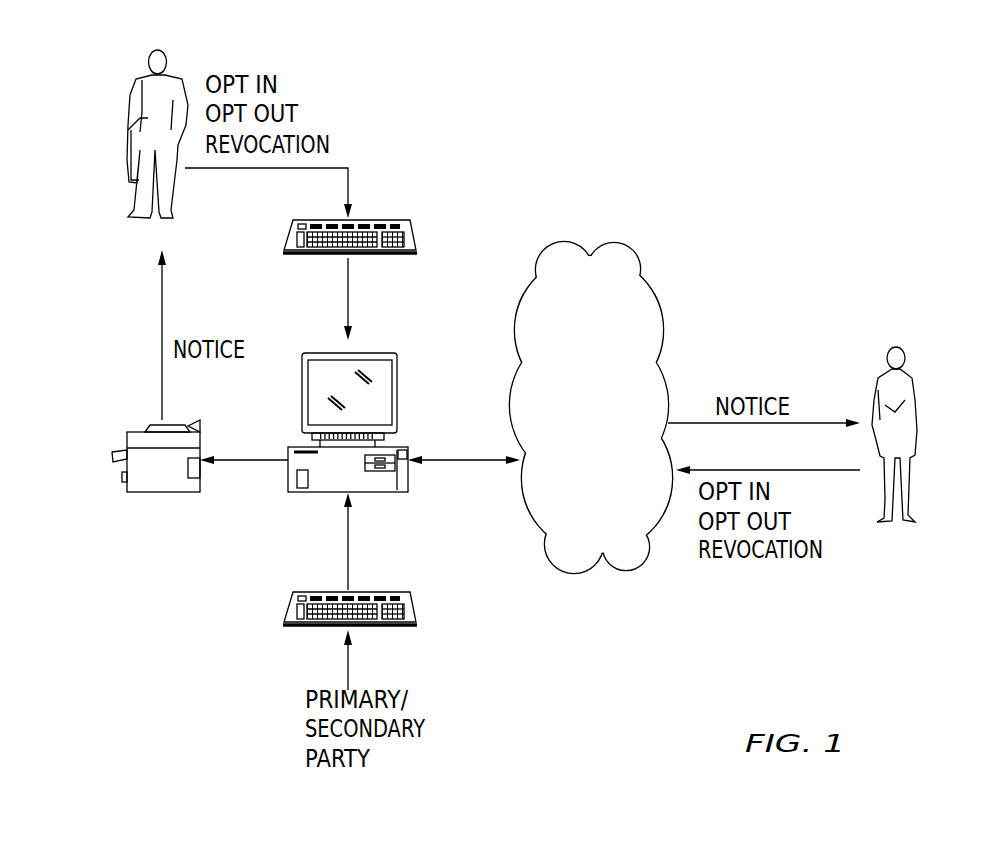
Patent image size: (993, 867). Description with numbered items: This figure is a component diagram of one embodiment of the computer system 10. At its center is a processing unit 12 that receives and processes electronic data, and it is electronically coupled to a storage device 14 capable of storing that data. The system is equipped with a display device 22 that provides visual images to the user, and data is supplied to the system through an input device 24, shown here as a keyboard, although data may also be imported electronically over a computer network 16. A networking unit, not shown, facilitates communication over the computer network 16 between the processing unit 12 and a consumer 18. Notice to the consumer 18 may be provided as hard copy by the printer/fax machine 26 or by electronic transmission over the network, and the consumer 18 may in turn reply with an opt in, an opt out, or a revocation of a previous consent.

The computer system 10 is at (514, 184).
The processing unit 12 is at (300, 492).
The storage device 14 is at (400, 492).
The computer network 16 is at (597, 437).
The consumer 18 is at (142, 119).
The display device 22 is at (397, 376).
The input device 24 is at (400, 222).
The printer/fax machine 26 is at (133, 492).